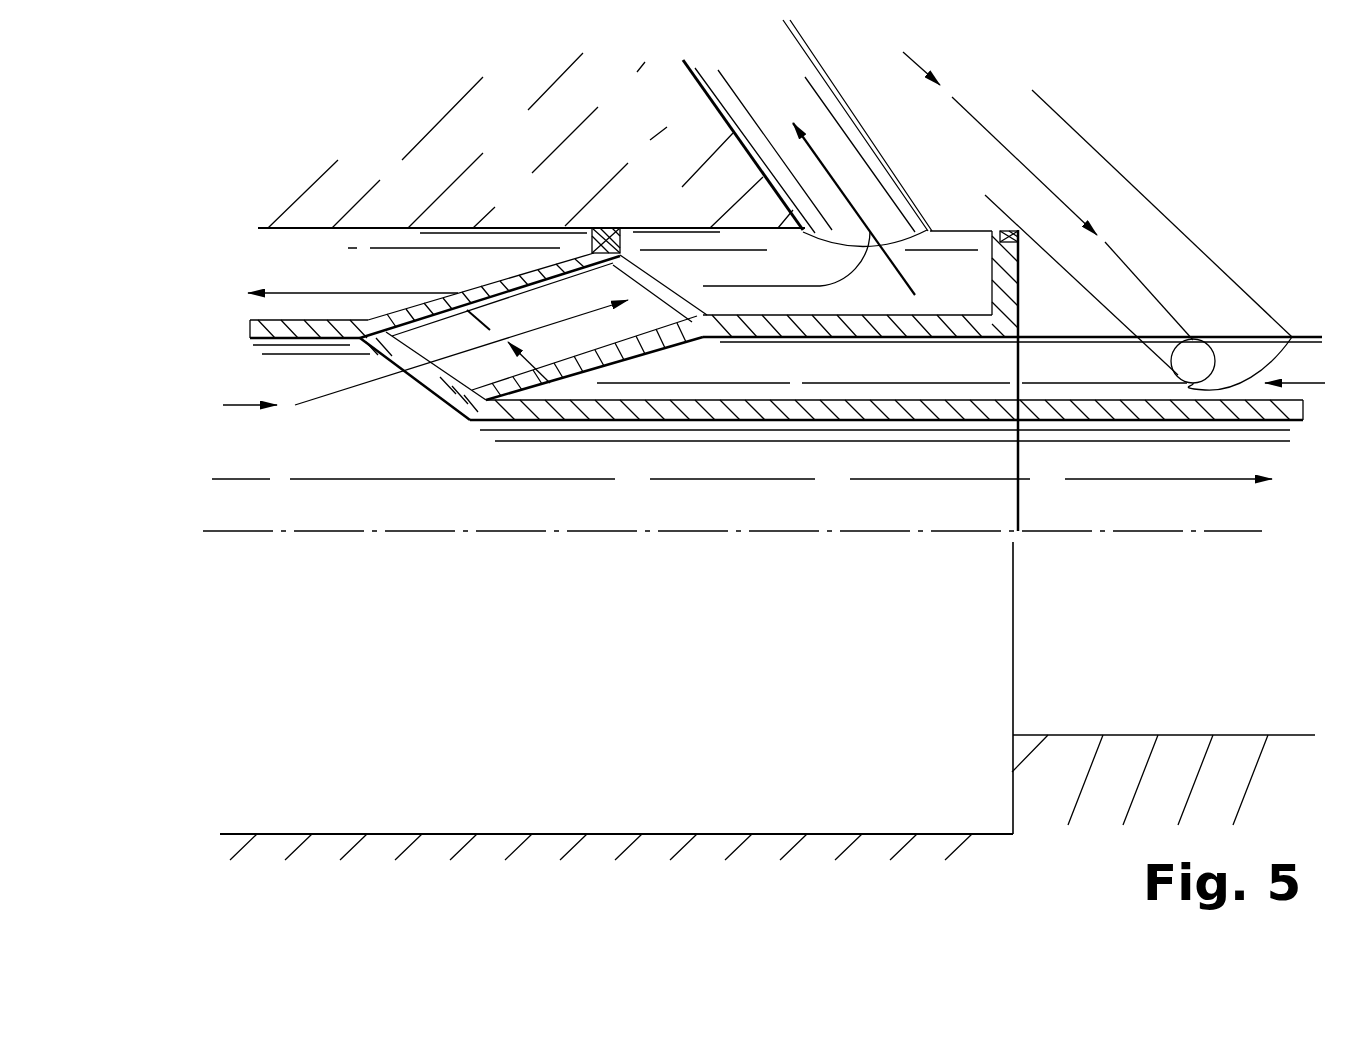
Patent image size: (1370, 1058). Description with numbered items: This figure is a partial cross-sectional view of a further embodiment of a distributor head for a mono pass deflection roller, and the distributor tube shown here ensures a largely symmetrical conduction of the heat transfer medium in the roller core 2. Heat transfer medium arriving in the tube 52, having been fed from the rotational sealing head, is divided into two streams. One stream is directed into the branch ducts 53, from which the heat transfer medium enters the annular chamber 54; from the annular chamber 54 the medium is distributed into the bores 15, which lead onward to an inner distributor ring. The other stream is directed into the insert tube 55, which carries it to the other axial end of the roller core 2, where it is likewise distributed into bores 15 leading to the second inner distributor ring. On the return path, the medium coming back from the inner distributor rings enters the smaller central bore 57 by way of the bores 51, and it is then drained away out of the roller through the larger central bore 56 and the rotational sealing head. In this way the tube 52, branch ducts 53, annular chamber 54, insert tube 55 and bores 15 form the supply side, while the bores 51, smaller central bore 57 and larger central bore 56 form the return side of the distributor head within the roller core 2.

The roller core 2 is at (1280, 141).
The bores 15 is at (730, 91).
The bores 51 is at (1043, 150).
The tube 52 is at (283, 326).
The branch ducts 53 is at (520, 277).
The annular chamber 54 is at (690, 262).
The insert tube 55 is at (1284, 418).
The larger central bore 56 is at (383, 262).
The smaller central bore 57 is at (1298, 353).